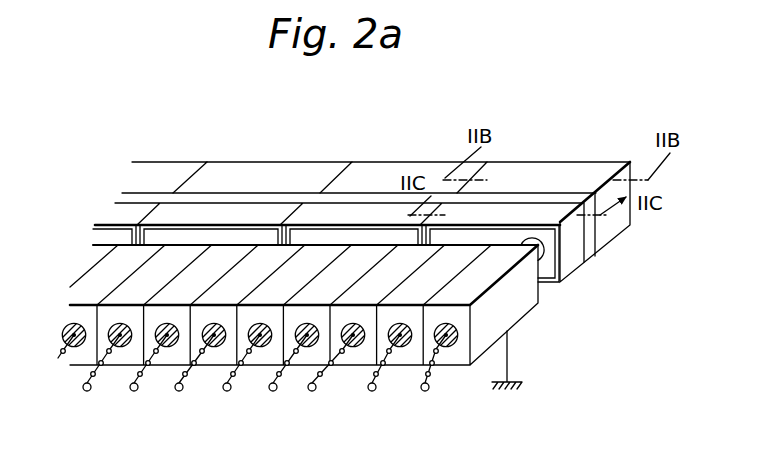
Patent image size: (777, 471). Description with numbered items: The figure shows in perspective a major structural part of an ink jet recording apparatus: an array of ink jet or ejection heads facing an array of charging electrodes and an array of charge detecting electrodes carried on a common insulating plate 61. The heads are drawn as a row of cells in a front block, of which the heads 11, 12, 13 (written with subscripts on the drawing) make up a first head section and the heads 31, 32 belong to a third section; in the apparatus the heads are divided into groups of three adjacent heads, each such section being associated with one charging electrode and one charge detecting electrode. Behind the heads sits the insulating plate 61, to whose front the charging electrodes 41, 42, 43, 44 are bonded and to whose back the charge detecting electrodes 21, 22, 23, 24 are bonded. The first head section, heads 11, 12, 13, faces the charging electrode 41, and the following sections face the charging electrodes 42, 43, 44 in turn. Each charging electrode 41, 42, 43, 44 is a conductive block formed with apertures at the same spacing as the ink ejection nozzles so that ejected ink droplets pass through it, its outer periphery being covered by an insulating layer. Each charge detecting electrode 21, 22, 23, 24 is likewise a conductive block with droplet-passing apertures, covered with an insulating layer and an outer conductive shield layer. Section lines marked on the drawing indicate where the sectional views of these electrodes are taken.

The charge detecting electrode 21 is at (557, 170).
The charge detecting electrode 22 is at (422, 172).
The charge detecting electrode 23 is at (250, 172).
The charge detecting electrode 24 is at (167, 173).
The charging electrode 41 is at (477, 215).
The charging electrode 42 is at (373, 217).
The charging electrode 43 is at (235, 217).
The charging electrode 44 is at (125, 217).
The insulating plate 61 is at (593, 237).
The ink jet head 11 is at (444, 364).
The ink jet head 12 is at (393, 370).
The ink jet head 13 is at (340, 370).
The ink jet head 31 is at (158, 371).
The ink jet head 32 is at (111, 371).